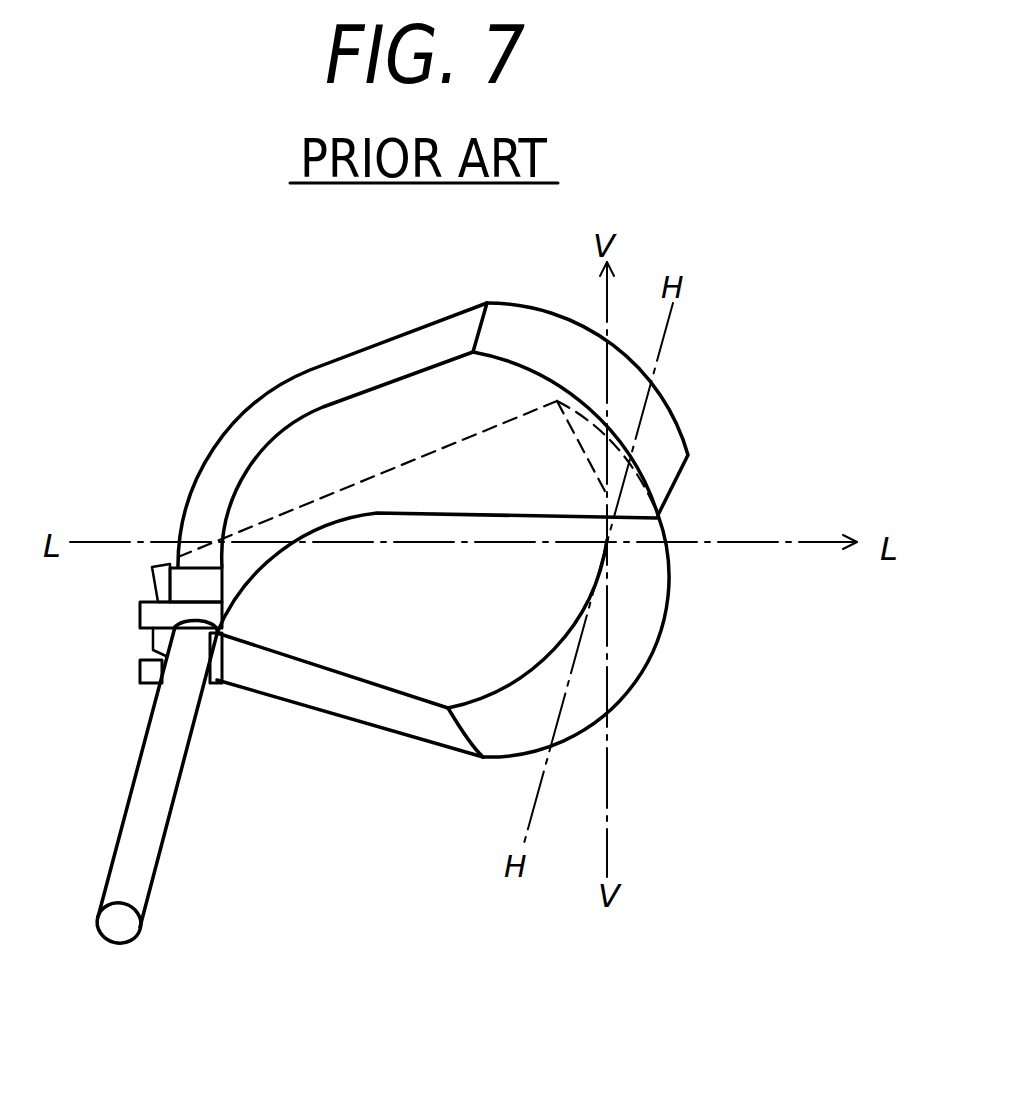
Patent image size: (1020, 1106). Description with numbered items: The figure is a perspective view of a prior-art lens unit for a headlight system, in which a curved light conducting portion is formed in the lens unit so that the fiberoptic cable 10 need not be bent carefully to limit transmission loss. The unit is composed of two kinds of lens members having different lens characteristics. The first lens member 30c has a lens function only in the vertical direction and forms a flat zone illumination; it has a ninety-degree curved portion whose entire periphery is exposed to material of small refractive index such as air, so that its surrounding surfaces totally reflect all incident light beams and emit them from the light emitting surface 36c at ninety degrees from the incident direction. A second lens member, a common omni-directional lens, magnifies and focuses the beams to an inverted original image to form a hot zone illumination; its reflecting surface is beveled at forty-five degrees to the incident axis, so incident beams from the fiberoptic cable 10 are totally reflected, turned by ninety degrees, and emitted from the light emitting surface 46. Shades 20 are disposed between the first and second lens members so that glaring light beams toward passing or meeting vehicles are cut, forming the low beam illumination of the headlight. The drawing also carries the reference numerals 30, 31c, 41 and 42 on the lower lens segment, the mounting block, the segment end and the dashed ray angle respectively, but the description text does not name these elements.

The fiberoptic cable 10 is at (147, 817).
The shades 20 is at (158, 613).
The lower segment of ring body 30 is at (397, 673).
The first lens member 30c is at (340, 423).
The attachment block 31c is at (187, 592).
The light emitting surface 36c is at (658, 447).
The end piece 41 is at (215, 683).
The angle between ray and axis 42 is at (450, 437).
The light emitting surface 46 is at (632, 637).